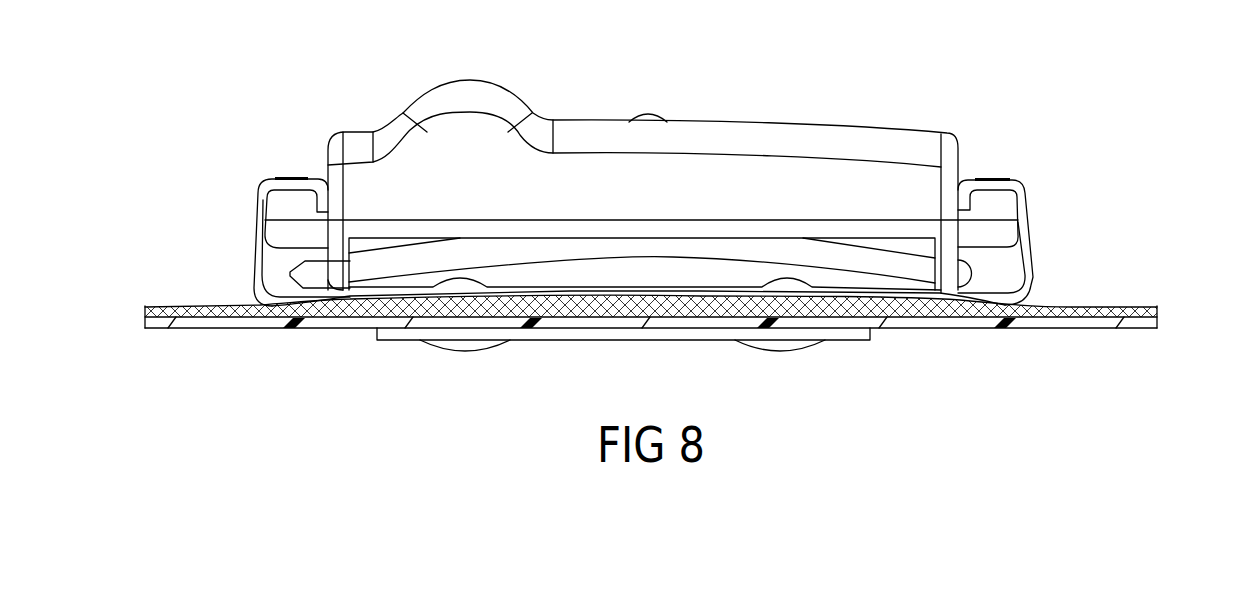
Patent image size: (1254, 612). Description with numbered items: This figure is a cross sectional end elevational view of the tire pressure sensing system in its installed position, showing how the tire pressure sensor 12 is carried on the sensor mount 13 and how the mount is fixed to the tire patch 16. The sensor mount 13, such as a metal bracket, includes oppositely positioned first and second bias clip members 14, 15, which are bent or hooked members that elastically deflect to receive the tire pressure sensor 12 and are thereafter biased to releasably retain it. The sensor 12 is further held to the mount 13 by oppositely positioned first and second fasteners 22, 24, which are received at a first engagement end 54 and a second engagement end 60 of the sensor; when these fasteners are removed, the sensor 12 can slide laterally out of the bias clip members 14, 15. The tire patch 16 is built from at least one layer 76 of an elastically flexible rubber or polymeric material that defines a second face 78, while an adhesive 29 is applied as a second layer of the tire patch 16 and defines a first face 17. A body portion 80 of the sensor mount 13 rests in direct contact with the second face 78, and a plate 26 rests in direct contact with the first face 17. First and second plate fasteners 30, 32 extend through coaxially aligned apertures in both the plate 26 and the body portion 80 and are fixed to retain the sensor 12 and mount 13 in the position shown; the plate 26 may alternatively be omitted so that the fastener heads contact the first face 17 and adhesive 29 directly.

The tire pressure sensor 12 is at (750, 127).
The sensor mount 13 is at (983, 295).
The first bias clip member 14 is at (275, 182).
The second bias clip member 15 is at (1022, 185).
The tire patch 16 is at (1172, 314).
The first face 17 is at (201, 333).
The first fastener 22 is at (292, 178).
The second fastener 24 is at (992, 178).
The plate 26 is at (603, 340).
The adhesive 29 is at (1042, 328).
The first plate fastener 30 is at (787, 345).
The second plate fastener 32 is at (463, 345).
The first engagement end 54 is at (282, 207).
The second engagement end 60 is at (997, 205).
The layer 76 is at (1100, 310).
The second face 78 is at (180, 300).
The body portion 80 is at (665, 291).